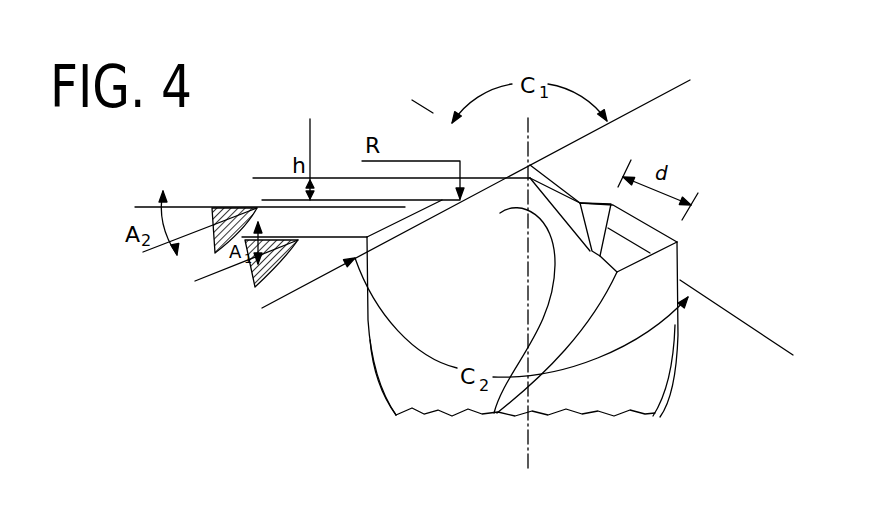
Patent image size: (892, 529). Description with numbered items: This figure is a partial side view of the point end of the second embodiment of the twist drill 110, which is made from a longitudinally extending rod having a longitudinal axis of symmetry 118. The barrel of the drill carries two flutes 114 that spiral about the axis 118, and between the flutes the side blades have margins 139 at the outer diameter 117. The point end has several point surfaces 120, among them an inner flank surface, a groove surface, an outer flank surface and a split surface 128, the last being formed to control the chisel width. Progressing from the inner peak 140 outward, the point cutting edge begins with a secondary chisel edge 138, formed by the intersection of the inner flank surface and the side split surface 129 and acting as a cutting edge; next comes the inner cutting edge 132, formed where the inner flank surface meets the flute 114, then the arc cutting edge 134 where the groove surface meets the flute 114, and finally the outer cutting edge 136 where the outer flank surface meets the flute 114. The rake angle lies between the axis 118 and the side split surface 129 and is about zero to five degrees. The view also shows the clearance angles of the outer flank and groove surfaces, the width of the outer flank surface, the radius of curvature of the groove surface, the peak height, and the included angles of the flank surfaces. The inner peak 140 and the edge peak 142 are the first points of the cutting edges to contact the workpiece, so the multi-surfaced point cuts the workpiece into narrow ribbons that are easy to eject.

The twist drill 110 is at (363, 333).
The flute 114 is at (400, 385).
The outer diameter 117 is at (680, 356).
The longitudinal axis of symmetry 118 is at (527, 448).
The point surface 120 is at (675, 240).
The split surface 128 is at (560, 321).
The side split surface 129 is at (505, 212).
The inner cutting edge 132 is at (512, 185).
The arc cutting edge 134 is at (449, 205).
The outer cutting edge 136 is at (368, 247).
The secondary chisel edge 138 is at (509, 171).
The margin 139 is at (667, 405).
The inner peak 140 is at (531, 161).
The edge peak 142 is at (440, 210).